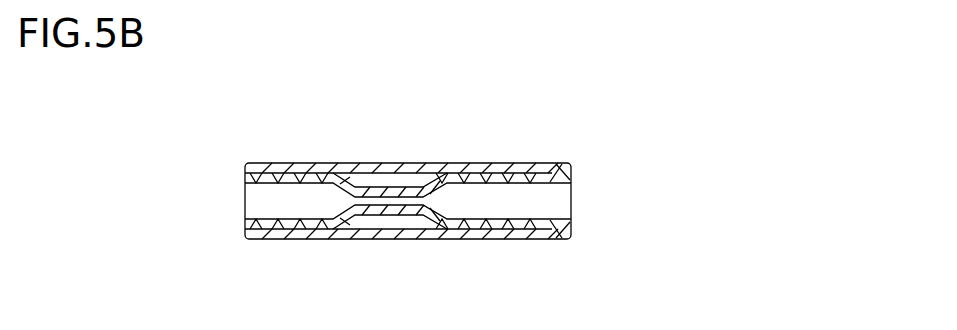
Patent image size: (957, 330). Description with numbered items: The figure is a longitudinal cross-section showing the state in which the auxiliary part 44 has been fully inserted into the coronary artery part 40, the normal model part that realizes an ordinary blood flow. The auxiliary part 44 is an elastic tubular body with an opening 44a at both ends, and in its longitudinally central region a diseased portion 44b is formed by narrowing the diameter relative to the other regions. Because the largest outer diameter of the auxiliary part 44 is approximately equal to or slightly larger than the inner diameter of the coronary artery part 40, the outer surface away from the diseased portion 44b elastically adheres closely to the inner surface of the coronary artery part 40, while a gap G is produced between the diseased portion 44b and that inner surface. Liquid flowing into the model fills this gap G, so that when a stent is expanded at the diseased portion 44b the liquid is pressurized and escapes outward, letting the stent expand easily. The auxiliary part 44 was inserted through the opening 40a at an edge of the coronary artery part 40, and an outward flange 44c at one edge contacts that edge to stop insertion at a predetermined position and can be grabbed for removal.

The coronary artery part 40 is at (284, 170).
The opening 40a is at (245, 173).
The auxiliary part 44 is at (275, 200).
The opening 44a is at (245, 199).
The diseased portion 44b is at (397, 212).
The flange 44c is at (562, 163).
The gap G is at (398, 185).